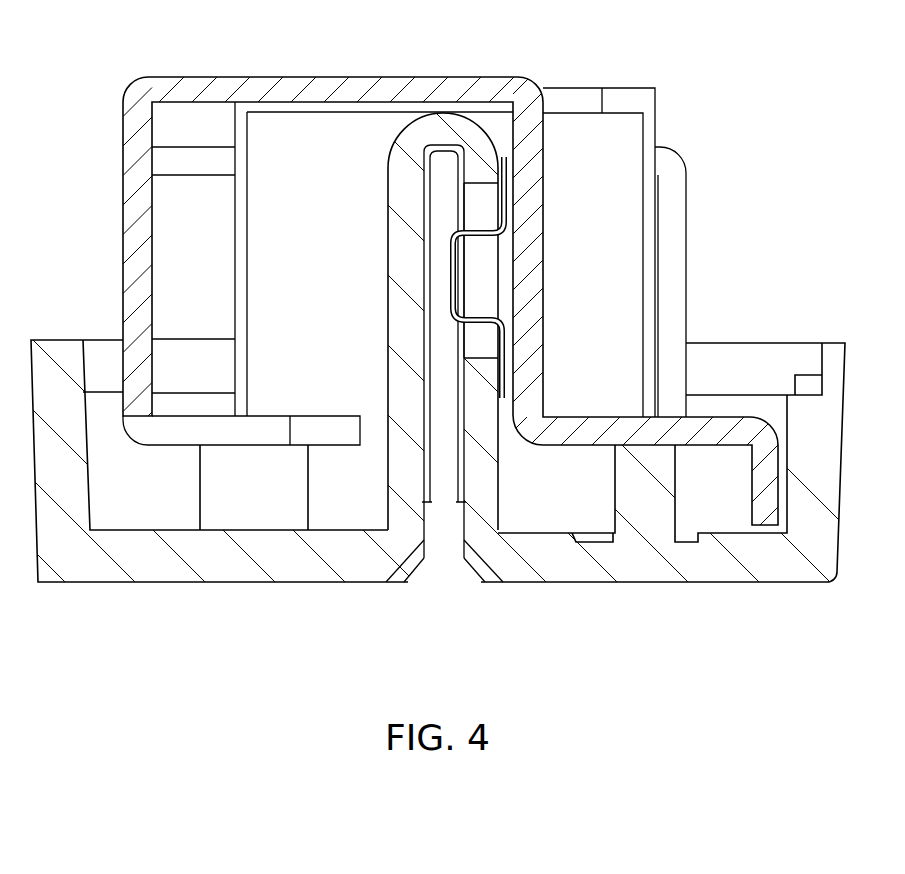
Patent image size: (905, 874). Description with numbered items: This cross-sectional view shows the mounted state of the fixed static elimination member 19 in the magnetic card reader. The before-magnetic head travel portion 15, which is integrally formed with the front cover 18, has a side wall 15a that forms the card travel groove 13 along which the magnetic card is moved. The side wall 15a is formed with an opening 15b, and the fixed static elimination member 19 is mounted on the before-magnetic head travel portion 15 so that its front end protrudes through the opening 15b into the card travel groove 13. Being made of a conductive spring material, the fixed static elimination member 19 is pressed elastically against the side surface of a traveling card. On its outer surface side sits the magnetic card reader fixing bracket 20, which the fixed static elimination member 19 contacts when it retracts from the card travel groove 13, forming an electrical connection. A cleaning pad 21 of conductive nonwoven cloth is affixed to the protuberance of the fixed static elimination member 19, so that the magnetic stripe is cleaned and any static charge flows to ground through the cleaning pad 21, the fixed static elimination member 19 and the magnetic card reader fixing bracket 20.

The before-magnetic head travel portion 15 is at (386, 166).
The side wall 15a is at (388, 258).
The opening 15b is at (485, 187).
The card travel groove 13 is at (441, 548).
The front cover 18 is at (656, 583).
The fixed static elimination member 19 is at (507, 214).
The magnetic card reader fixing bracket 20 is at (545, 287).
The cleaning pad 21 is at (450, 294).